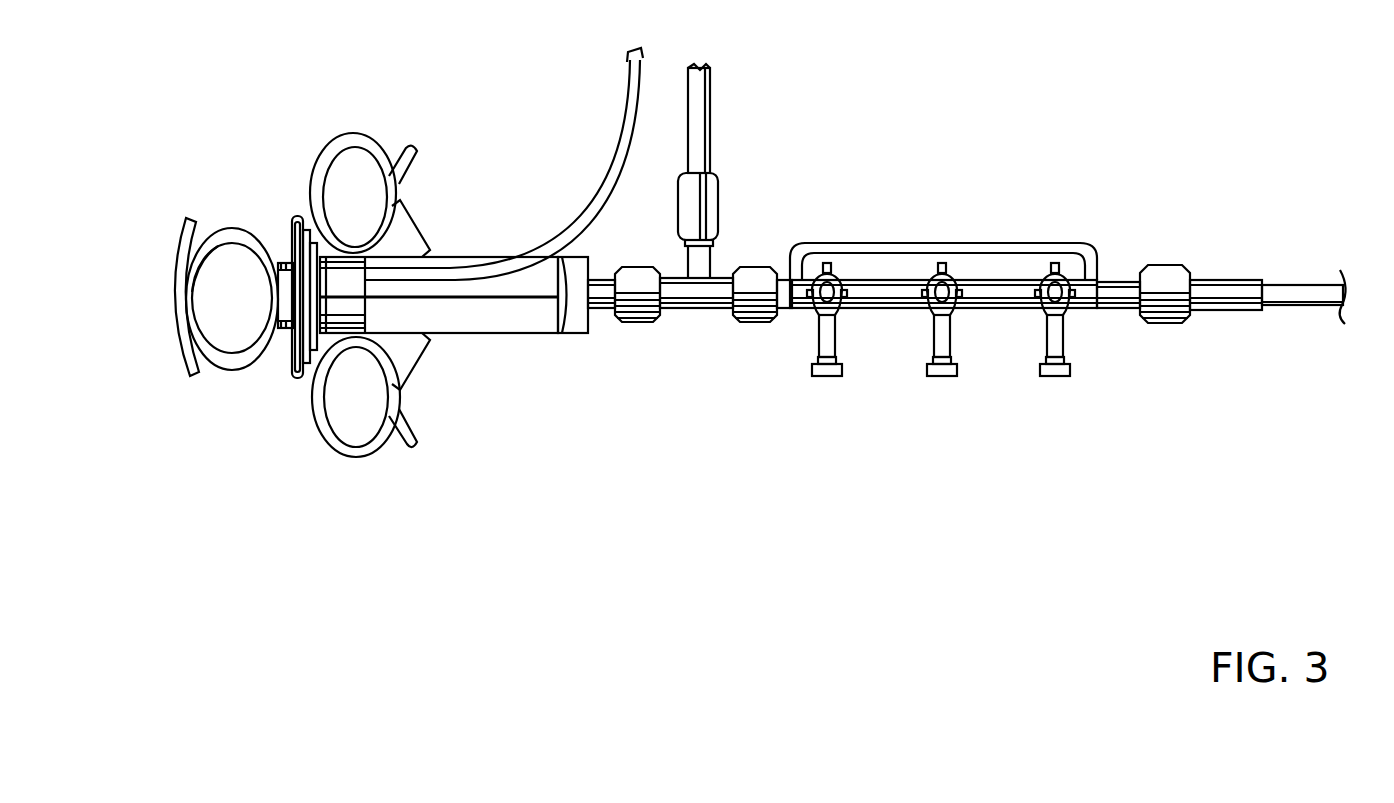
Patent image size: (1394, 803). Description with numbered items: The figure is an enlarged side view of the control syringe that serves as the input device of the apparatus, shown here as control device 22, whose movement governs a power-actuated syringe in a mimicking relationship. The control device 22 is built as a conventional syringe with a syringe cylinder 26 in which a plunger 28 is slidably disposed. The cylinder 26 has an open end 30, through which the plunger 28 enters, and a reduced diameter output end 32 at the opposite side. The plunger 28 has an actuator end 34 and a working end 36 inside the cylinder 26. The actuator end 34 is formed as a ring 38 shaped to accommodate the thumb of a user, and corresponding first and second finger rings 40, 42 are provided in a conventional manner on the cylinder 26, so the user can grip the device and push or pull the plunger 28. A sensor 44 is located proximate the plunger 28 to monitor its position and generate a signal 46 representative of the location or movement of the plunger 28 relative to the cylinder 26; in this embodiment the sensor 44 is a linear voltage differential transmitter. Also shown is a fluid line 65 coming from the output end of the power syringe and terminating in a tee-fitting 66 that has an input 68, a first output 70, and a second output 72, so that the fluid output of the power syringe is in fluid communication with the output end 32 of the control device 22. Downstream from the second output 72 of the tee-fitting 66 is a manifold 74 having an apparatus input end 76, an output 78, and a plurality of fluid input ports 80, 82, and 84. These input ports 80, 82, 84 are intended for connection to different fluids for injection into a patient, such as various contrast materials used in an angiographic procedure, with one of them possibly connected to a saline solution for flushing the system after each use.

The control device 22 is at (474, 488).
The syringe cylinder 26 is at (483, 334).
The plunger 28 is at (460, 296).
The open end 30 is at (290, 242).
The reduced diameter output end 32 is at (605, 323).
The actuator end 34 is at (203, 376).
The working end 36 is at (583, 317).
The ring 38 is at (187, 291).
The first finger ring 40 is at (328, 152).
The second finger ring 42 is at (383, 442).
The sensor 44 is at (347, 303).
The signal 46 is at (592, 226).
The fluid line 65 is at (710, 110).
The tee-fitting 66 is at (728, 257).
The input 68 is at (718, 207).
The first output 70 is at (682, 309).
The second output 72 is at (745, 323).
The manifold 74 is at (920, 242).
The apparatus input end 76 is at (800, 312).
The output 78 is at (1083, 308).
The fluid input port 80 is at (840, 364).
The fluid input port 82 is at (955, 364).
The fluid input port 84 is at (1060, 375).